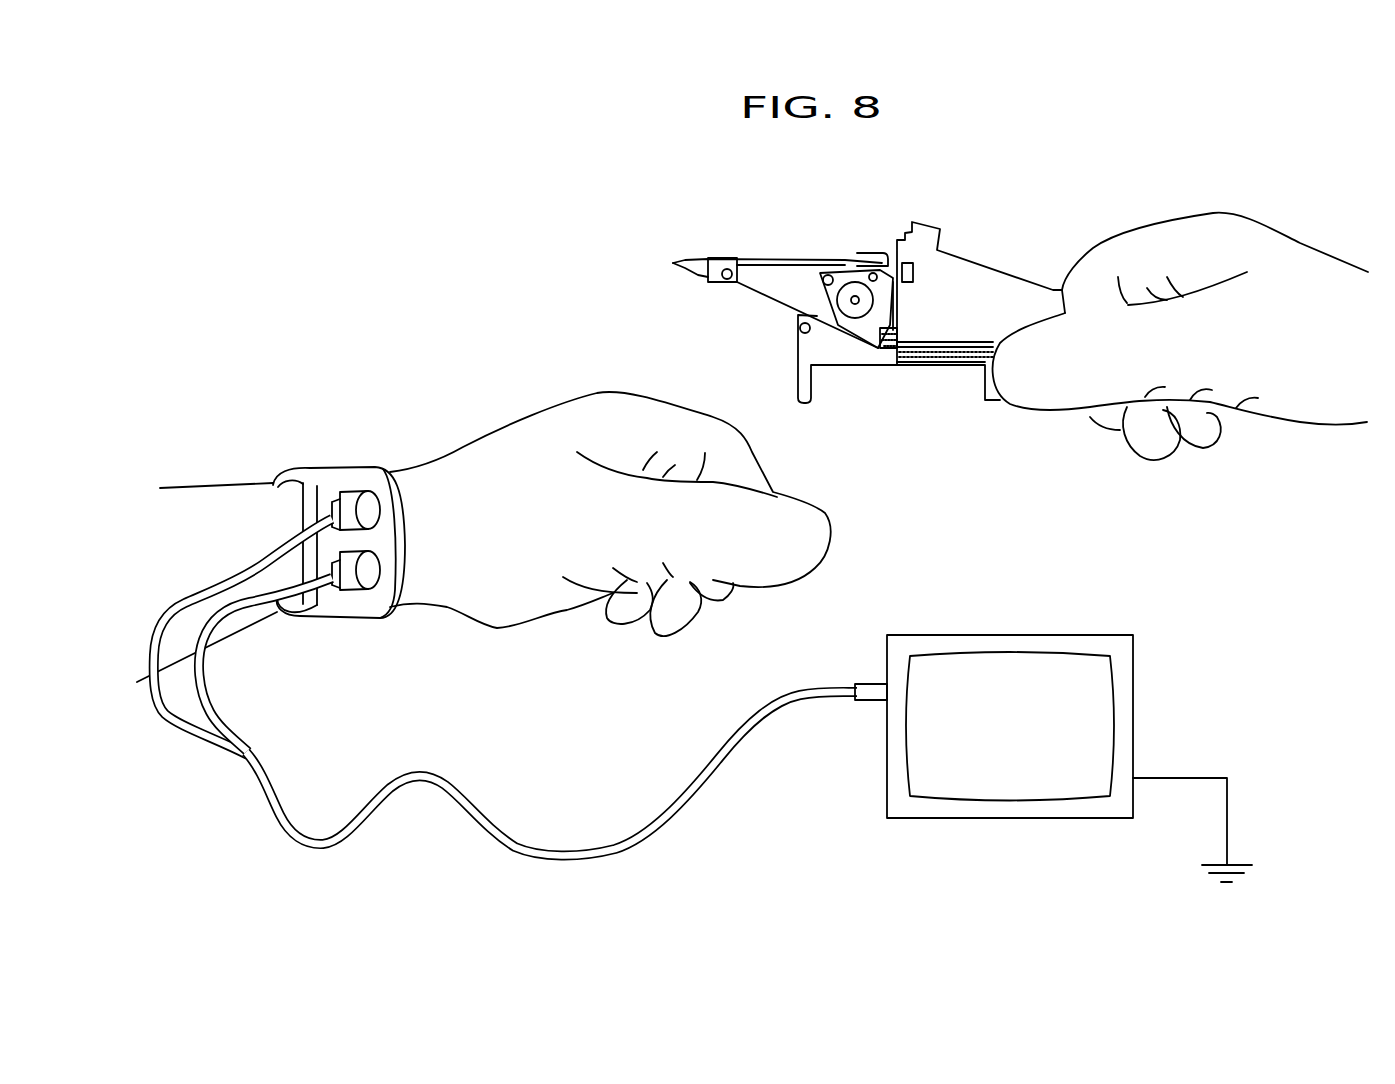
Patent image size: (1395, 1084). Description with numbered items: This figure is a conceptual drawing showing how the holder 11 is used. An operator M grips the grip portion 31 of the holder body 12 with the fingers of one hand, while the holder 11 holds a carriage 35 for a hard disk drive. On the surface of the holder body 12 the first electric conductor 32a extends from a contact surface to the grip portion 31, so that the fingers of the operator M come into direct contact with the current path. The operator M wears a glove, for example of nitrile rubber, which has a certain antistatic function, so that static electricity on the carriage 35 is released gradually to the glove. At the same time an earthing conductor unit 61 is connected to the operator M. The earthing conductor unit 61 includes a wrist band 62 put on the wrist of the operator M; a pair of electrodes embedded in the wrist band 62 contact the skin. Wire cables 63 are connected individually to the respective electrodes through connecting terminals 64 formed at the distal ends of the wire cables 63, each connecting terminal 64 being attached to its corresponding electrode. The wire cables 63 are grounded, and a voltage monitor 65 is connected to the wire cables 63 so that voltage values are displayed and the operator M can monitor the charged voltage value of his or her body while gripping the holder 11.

The holder 11 is at (1001, 259).
The holder body 12 is at (803, 348).
The grip portion 31 is at (997, 397).
The first electric conductor 32a is at (910, 352).
The carriage 35 is at (803, 236).
The earthing conductor unit 61 is at (258, 809).
The wrist band 62 is at (323, 470).
The wire cables 63 is at (152, 612).
The connecting terminals 64 is at (367, 497).
The voltage monitor 65 is at (1038, 635).
The operator M is at (1288, 428).